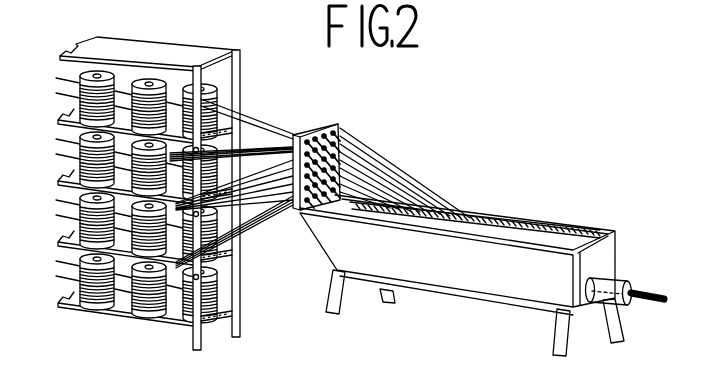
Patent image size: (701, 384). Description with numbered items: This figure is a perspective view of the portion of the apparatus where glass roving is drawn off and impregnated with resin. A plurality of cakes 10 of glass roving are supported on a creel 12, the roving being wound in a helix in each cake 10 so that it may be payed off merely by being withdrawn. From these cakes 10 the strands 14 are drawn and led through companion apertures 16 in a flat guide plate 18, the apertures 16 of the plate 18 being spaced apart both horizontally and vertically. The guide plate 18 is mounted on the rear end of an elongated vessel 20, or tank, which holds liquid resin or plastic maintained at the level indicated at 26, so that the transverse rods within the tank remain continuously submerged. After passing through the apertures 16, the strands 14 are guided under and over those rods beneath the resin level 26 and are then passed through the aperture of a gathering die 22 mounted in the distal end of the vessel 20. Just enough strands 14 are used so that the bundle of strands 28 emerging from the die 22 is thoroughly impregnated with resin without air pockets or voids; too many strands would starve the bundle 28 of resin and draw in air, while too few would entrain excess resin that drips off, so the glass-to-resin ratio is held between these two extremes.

The cakes of glass roving 10 is at (80, 83).
The creel 12 is at (150, 180).
The strands 14 is at (288, 130).
The apertures 16 is at (345, 140).
The guide plate 18 is at (327, 124).
The vessel 20 is at (450, 270).
The gathering die 22 is at (607, 283).
The resin level 26 is at (487, 220).
The bundle of strands 28 is at (650, 293).